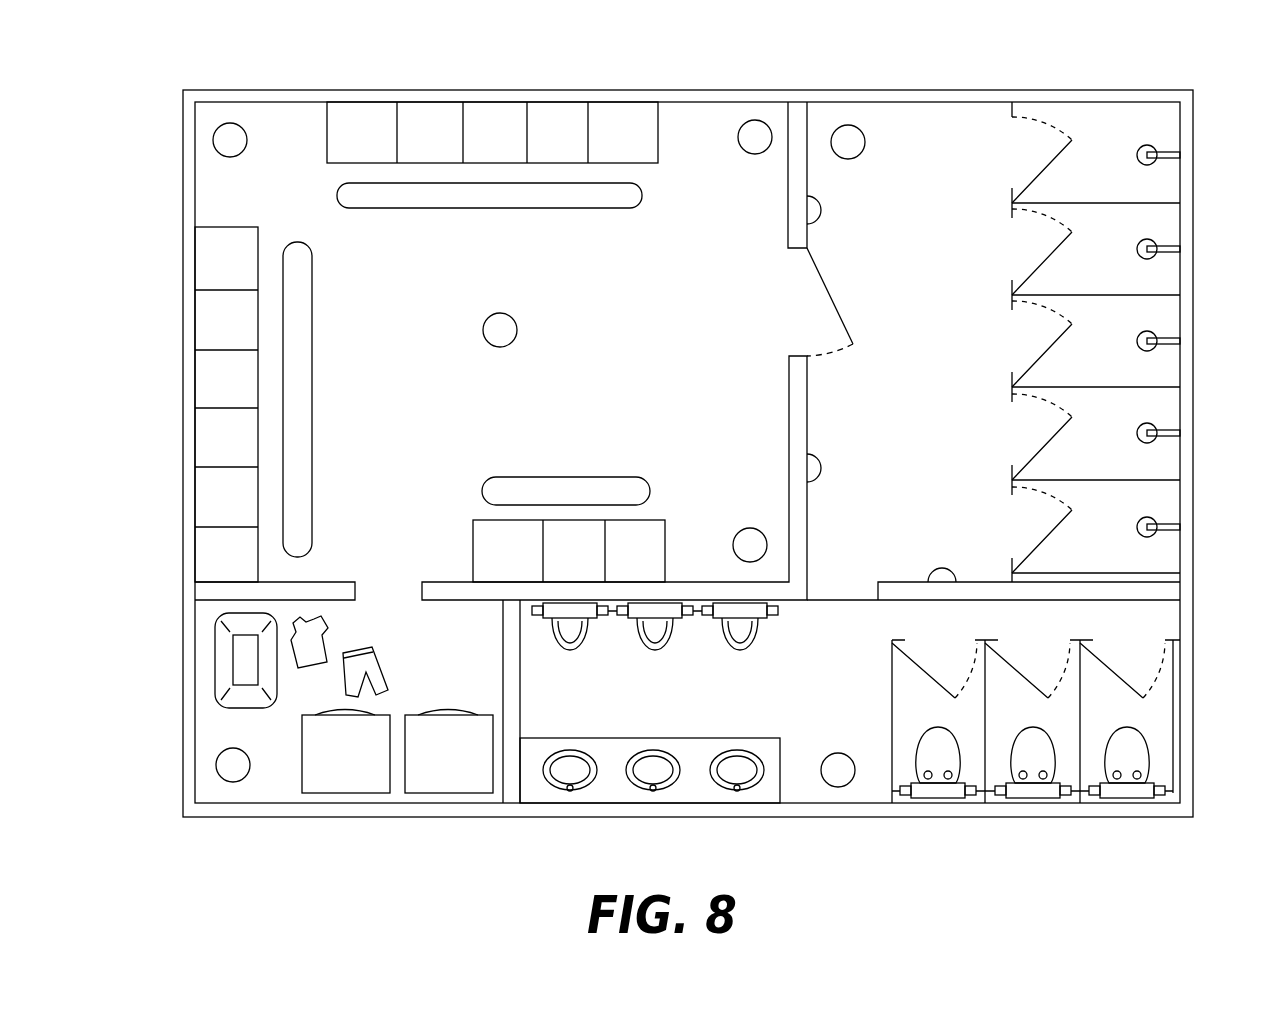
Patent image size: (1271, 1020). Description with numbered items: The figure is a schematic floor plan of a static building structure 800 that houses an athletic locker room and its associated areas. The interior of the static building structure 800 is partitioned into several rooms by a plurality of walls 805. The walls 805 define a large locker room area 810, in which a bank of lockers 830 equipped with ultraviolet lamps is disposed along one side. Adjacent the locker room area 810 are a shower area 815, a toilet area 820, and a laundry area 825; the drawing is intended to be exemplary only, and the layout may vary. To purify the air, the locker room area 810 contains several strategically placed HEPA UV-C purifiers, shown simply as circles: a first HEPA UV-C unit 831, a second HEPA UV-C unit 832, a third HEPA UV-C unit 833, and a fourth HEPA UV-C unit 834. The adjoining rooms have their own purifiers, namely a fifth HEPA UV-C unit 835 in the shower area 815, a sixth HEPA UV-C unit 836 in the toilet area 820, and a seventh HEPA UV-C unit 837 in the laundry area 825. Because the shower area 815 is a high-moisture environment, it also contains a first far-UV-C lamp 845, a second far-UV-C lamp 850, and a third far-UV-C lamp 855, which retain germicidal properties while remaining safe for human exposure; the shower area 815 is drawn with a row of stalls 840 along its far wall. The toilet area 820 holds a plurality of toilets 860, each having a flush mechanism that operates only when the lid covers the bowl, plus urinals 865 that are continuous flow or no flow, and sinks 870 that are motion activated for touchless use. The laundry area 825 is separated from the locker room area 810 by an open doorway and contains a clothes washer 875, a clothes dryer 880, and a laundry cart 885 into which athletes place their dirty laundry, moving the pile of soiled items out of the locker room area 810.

The static building structure 800 is at (156, 85).
The walls 805 is at (428, 90).
The locker room area 810 is at (562, 268).
The shower area 815 is at (958, 195).
The toilet area 820 is at (803, 707).
The laundry area 825 is at (222, 725).
The lockers 830 is at (222, 257).
The first HEPA UV-C unit 831 is at (222, 140).
The second HEPA UV-C unit 832 is at (490, 330).
The third HEPA UV-C unit 833 is at (752, 147).
The fourth HEPA UV-C unit 834 is at (743, 535).
The fifth HEPA UV-C unit 835 is at (852, 148).
The sixth HEPA UV-C unit 836 is at (834, 756).
The seventh HEPA UV-C unit 837 is at (222, 766).
The toilet stalls 840 is at (1152, 180).
The first far-UV-C lamp 845 is at (815, 218).
The second far-UV-C lamp 850 is at (820, 470).
The third far-UV-C lamp 855 is at (932, 573).
The toilets 860 is at (1137, 753).
The urinals 865 is at (653, 637).
The sinks 870 is at (568, 765).
The clothes washer 875 is at (345, 793).
The clothes dryer 880 is at (450, 793).
The laundry cart 885 is at (215, 658).